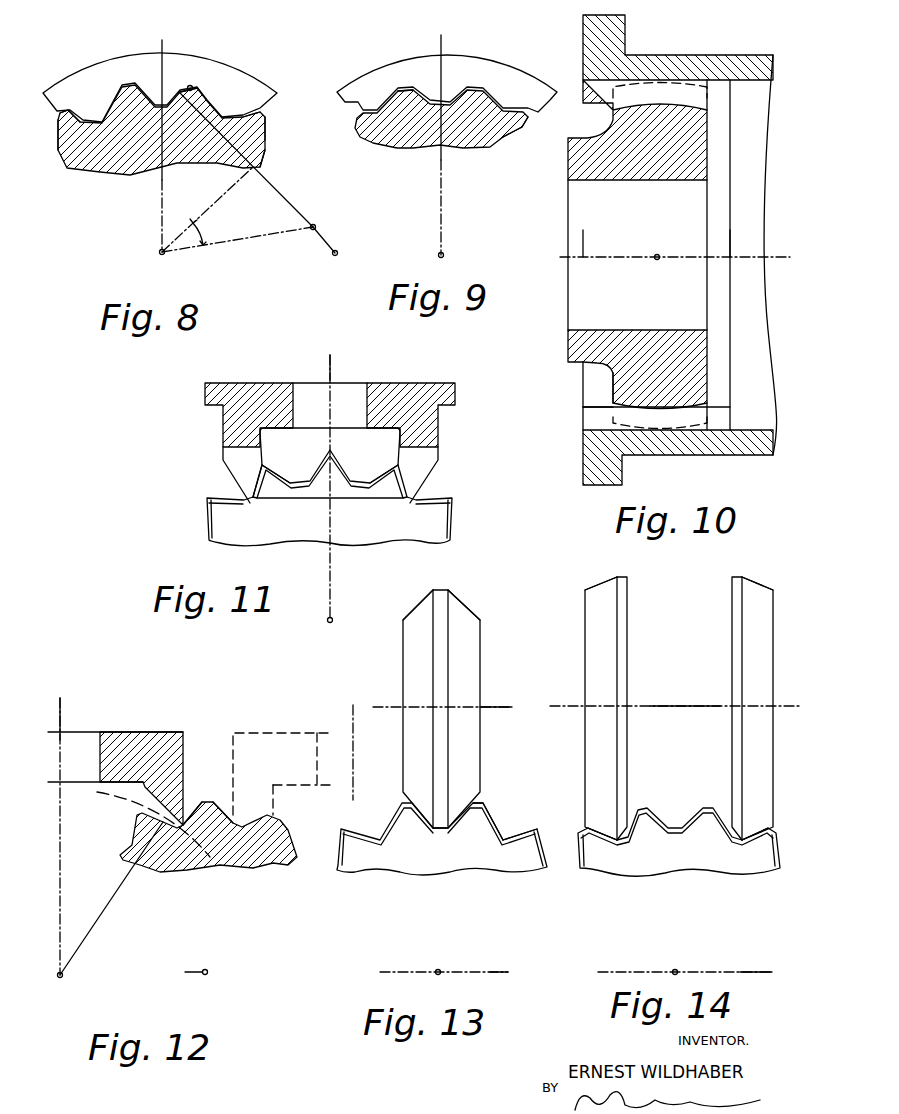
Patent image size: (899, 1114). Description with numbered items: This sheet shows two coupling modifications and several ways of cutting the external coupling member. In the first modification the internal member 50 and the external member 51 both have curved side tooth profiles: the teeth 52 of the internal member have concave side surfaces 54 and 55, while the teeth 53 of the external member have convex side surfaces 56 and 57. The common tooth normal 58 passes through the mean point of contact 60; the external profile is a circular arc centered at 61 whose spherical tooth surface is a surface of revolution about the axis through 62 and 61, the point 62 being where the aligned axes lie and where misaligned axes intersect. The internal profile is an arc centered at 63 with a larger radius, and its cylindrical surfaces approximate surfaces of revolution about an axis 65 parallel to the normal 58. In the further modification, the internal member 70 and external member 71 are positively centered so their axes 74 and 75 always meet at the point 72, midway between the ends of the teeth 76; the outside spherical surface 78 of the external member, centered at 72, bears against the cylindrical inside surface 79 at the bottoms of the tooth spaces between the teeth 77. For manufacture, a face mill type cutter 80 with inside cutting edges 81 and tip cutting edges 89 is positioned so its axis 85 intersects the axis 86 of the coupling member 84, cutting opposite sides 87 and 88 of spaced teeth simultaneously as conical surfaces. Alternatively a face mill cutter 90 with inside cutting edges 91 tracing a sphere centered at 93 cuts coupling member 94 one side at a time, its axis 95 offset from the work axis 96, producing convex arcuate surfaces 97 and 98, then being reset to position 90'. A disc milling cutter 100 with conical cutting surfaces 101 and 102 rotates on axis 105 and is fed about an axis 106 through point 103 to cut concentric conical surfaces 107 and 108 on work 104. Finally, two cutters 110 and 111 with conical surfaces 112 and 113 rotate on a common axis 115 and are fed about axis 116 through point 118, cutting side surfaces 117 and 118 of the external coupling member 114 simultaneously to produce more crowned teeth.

In FIG. 8, the internal member 50 is at (240, 80).
In FIG. 8, the external member 51 is at (97, 170).
In FIG. 8, the teeth of the internal member 52 is at (60, 153).
In FIG. 8, the teeth of the external member 53 is at (267, 127).
In FIG. 8, the side surface 54 is at (196, 82).
In FIG. 8, the side surface 55 is at (267, 115).
In FIG. 8, the side surface 56 is at (58, 130).
In FIG. 8, the side surface 57 is at (270, 143).
In FIG. 8, the common tooth normal 58 is at (283, 197).
In FIG. 8, the mean point of contact 60 is at (180, 92).
In FIG. 8, the center of external tooth profile 61 is at (314, 225).
In FIG. 8, the axis position 62 is at (158, 253).
In FIG. 8, the center of internal tooth profile 63 is at (333, 257).
In FIG. 8, the axis 65 is at (177, 259).
In FIG. 9, the internal member 70 is at (510, 80).
In FIG. 10, the internal member 70 is at (675, 447).
In FIG. 9, the external member 71 is at (403, 150).
In FIG. 10, the external member 71 is at (593, 335).
In FIG. 9, the intersection point 72 is at (445, 256).
In FIG. 10, the intersection point 72 is at (659, 254).
In FIG. 10, the axis of the external member 74 is at (595, 255).
In FIG. 10, the axis of the internal member 75 is at (742, 255).
In FIG. 9, the teeth of the external member 76 is at (420, 87).
In FIG. 10, the teeth of the external member 76 is at (613, 402).
In FIG. 9, the teeth of the internal member 77 is at (500, 140).
In FIG. 10, the teeth of the internal member 77 is at (588, 422).
In FIG. 10, the outside spherical surface 78 is at (703, 82).
In FIG. 10, the cylindrical inside surface 79 is at (718, 427).
In FIG. 11, the face mill type cutter 80 is at (402, 392).
In FIG. 11, the inside cutting edges 81 is at (267, 453).
In FIG. 11, the external coupling member 84 is at (362, 532).
In FIG. 11, the cutter axis 85 is at (332, 375).
In FIG. 11, the axis of the coupling member 86 is at (332, 621).
In FIG. 11, the tooth side surface 87 is at (262, 485).
In FIG. 11, the tooth side surface 88 is at (395, 493).
In FIG. 11, the tip cutting edges 89 is at (250, 515).
In FIG. 12, the face mill cutter 90 is at (141, 764).
In FIG. 12, the reset cutter position 90' is at (283, 759).
In FIG. 12, the inside cutting edges 91 is at (130, 825).
In FIG. 12, the center of spherical surface 93 is at (58, 978).
In FIG. 12, the coupling member 94 is at (223, 853).
In FIG. 12, the cutter axis 95 is at (62, 722).
In FIG. 12, the axis of the coupling member 96 is at (208, 970).
In FIG. 12, the tooth side surface 97 is at (187, 820).
In FIG. 12, the tooth side surface 98 is at (230, 813).
In FIG. 13, the disc milling cutter 100 is at (475, 680).
In FIG. 13, the conical surface 101 is at (427, 600).
In FIG. 13, the conical surface 102 is at (463, 602).
In FIG. 13, the point 103 is at (440, 968).
In FIG. 13, the work 104 is at (473, 868).
In FIG. 13, the cutter axis 105 is at (490, 707).
In FIG. 13, the feed axis 106 is at (495, 970).
In FIG. 13, the tooth side surface 107 is at (522, 827).
In FIG. 13, the tooth side surface 108 is at (490, 815).
In FIG. 14, the cutter 110 is at (593, 665).
In FIG. 14, the cutter 111 is at (768, 647).
In FIG. 14, the conical surface 112 is at (600, 577).
In FIG. 14, the conical surface 113 is at (762, 580).
In FIG. 14, the external coupling member 114 is at (687, 877).
In FIG. 14, the common axis 115 is at (700, 707).
In FIG. 14, the feed axis 116 is at (730, 970).
In FIG. 14, the side tooth surface 117 is at (750, 840).
In FIG. 14, the side tooth surface 118 is at (605, 837).